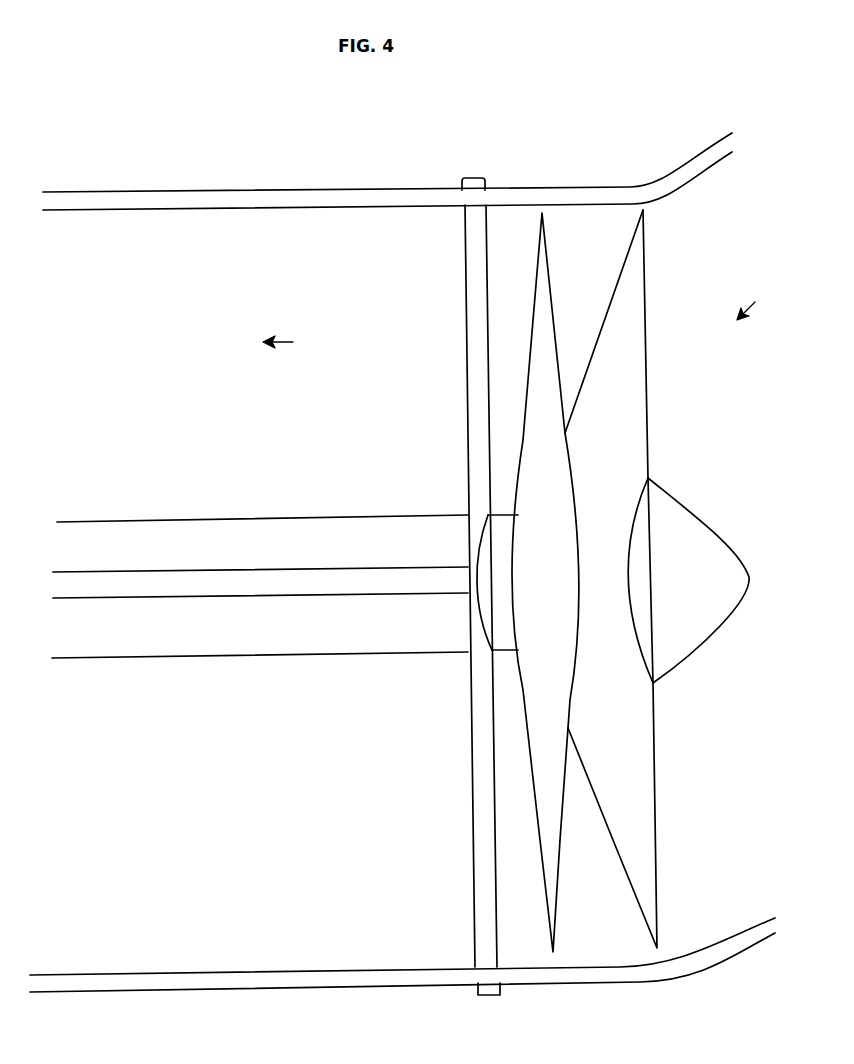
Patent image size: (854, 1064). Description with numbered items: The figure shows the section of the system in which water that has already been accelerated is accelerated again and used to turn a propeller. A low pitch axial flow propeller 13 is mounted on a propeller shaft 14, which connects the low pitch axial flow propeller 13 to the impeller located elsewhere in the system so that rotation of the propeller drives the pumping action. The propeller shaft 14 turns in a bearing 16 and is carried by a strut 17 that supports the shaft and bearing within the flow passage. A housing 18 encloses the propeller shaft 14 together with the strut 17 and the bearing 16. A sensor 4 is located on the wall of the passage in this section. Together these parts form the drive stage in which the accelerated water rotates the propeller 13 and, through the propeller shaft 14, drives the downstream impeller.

The sensor 4 is at (369, 207).
The low pitch axial flow propeller 13 is at (742, 477).
The propeller shaft 14 is at (208, 570).
The bearing 16 is at (505, 513).
The strut 17 is at (473, 177).
The housing 18 is at (295, 520).